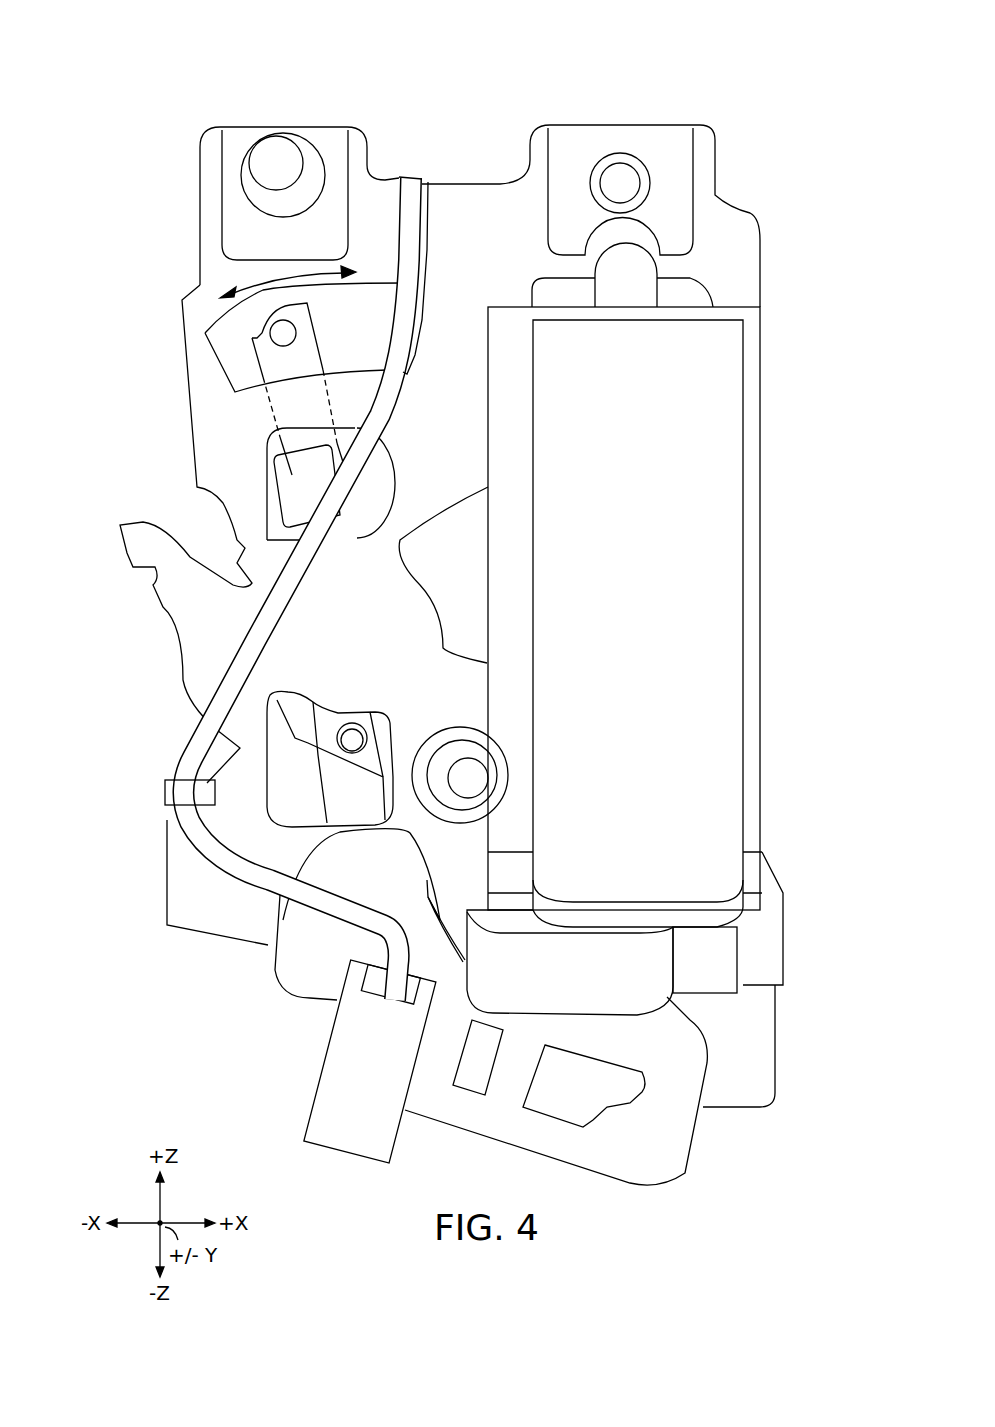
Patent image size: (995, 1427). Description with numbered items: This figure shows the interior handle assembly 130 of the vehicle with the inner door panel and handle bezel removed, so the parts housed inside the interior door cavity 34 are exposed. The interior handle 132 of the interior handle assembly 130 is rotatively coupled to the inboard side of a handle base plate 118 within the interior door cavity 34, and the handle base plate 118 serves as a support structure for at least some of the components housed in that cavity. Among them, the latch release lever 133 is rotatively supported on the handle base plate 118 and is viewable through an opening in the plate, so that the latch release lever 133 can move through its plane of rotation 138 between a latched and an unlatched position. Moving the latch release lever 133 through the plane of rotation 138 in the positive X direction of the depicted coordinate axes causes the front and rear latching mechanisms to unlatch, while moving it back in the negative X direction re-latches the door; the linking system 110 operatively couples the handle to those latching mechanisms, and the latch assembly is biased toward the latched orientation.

The linking system 110 is at (103, 94).
The interior door cavity 34 is at (135, 214).
The handle base plate 118 is at (327, 127).
The plane of rotation 138 is at (278, 272).
The latch release lever 133 is at (300, 303).
The interior handle assembly 130 is at (798, 486).
The interior handle 132 is at (742, 630).